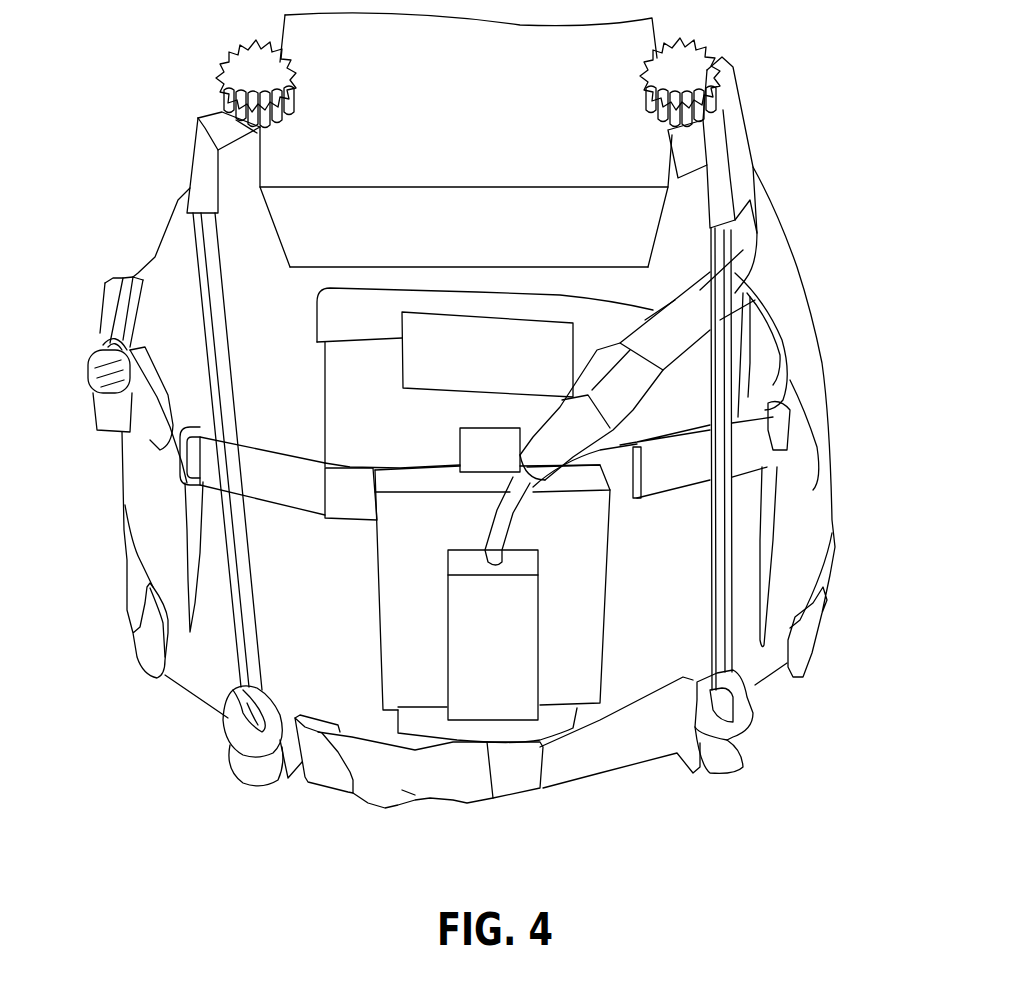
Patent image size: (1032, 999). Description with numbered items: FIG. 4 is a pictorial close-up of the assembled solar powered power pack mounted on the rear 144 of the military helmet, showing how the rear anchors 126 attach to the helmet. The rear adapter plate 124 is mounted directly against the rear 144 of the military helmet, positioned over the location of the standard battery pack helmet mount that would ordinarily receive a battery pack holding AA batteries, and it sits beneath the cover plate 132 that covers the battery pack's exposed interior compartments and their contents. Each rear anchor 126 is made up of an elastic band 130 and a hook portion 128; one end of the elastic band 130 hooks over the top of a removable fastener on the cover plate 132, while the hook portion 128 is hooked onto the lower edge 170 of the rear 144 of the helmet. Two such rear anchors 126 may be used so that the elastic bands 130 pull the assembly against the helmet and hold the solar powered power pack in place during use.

The rear adapter plate 124 is at (567, 648).
The rear anchor 126 is at (190, 535).
The hook portion 128 is at (252, 762).
The elastic band 130 is at (245, 647).
The cover plate 132 is at (477, 133).
The rear of the military helmet 144 is at (757, 404).
The lower edge 170 is at (312, 795).